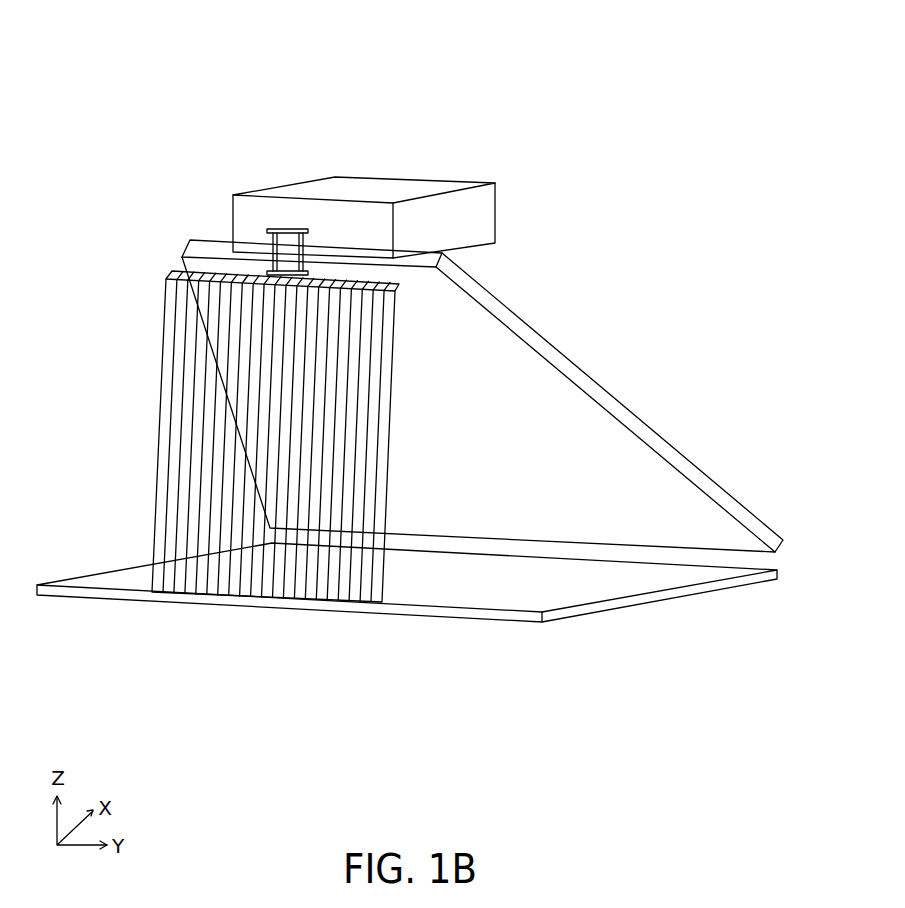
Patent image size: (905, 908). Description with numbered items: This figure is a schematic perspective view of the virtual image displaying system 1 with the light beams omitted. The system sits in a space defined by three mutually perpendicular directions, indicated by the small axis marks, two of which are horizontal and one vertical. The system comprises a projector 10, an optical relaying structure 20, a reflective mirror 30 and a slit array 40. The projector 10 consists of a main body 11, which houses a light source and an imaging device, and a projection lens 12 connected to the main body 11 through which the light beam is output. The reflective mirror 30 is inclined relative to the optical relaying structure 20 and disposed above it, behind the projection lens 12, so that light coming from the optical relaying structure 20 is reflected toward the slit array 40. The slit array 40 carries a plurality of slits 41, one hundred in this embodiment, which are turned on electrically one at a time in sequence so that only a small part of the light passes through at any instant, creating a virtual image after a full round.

The virtual image displaying system 1 is at (162, 52).
The projector 10 is at (270, 121).
The main body 11 is at (392, 188).
The projection lens 12 is at (284, 257).
The optical relaying structure 20 is at (480, 617).
The reflective mirror 30 is at (622, 415).
The slit array 40 is at (163, 390).
The slits 41 is at (205, 540).